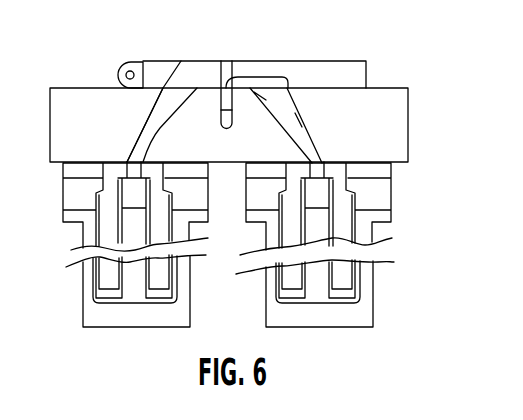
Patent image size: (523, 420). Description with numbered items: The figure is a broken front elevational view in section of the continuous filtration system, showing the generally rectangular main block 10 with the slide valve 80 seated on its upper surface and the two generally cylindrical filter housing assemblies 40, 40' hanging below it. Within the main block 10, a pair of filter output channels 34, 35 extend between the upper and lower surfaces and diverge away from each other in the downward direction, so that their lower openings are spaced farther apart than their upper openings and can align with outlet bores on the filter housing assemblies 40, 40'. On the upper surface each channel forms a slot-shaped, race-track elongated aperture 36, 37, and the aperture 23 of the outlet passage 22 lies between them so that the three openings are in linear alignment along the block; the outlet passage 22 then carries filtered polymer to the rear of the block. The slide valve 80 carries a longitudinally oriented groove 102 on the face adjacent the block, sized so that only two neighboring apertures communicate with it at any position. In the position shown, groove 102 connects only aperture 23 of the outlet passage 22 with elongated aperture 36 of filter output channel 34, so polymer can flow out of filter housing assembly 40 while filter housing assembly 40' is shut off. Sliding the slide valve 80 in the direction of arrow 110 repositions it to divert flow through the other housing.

The main block 10 is at (62, 145).
The slide valve 80 is at (357, 62).
The arrow 110 is at (165, 75).
The elongated aperture 37 is at (181, 61).
The filter output channel 35 is at (154, 114).
The aperture 23 is at (222, 62).
The groove 102 is at (253, 77).
The elongated aperture 36 is at (284, 77).
The filter output channel 34 is at (290, 105).
The outlet passage 22 is at (236, 110).
The filter housing assembly 40' is at (129, 259).
The filter housing assembly 40 is at (319, 259).